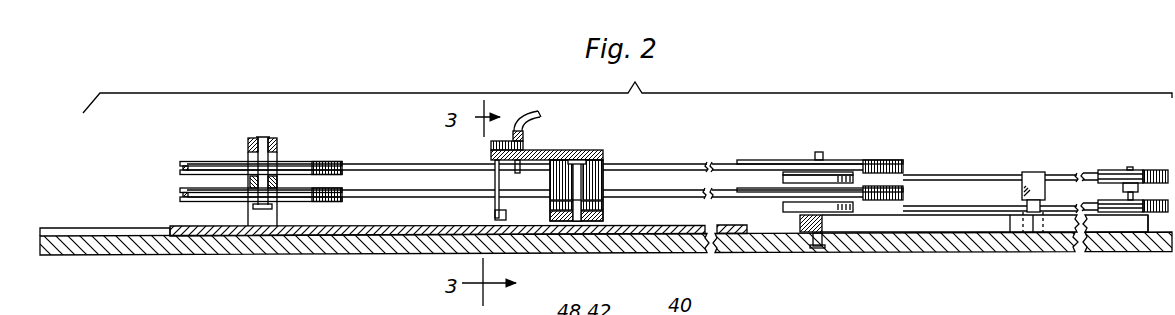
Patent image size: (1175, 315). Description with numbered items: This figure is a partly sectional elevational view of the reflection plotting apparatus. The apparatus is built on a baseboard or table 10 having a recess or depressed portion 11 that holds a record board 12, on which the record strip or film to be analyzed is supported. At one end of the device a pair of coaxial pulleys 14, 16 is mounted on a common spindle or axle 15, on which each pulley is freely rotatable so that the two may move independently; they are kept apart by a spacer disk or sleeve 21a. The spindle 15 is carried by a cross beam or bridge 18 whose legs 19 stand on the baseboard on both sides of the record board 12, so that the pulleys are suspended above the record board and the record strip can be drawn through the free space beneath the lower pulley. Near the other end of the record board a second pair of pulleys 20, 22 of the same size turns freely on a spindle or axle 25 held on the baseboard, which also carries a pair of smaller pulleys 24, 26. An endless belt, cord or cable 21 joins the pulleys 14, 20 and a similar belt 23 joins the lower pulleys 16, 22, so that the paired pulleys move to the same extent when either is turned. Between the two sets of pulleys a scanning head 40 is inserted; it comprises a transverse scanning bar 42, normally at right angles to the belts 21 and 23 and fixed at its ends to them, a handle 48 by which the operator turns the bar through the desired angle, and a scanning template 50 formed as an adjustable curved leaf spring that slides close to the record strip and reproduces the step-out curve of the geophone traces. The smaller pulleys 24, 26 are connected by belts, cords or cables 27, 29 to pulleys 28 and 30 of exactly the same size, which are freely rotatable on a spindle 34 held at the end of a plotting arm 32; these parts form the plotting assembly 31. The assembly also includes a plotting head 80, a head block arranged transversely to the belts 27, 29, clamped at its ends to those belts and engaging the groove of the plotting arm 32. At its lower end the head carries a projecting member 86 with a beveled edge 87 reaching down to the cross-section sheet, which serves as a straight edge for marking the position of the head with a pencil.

The baseboard or table 10 is at (210, 250).
The recess or depressed portion 11 is at (135, 231).
The record board 12 is at (186, 232).
The pulley 14 is at (200, 166).
The spindle or axle 15 is at (271, 162).
The pulley 16 is at (190, 199).
The cross beam or bridge 18 is at (264, 148).
The legs 19 is at (276, 216).
The pulley 20 is at (887, 160).
The endless belt, cord or cable 21 is at (380, 167).
The spacer disk or sleeve 21a is at (284, 173).
The pulley 22 is at (903, 190).
The belt 23 is at (388, 194).
The pulley 24 is at (784, 180).
The spindle or axle 25 is at (820, 152).
The pulley 26 is at (786, 204).
The endless belt, cord or cable 27 is at (962, 174).
The pulley 28 is at (1150, 170).
The endless belt, cord or cable 29 is at (975, 205).
The pulley 30 is at (1157, 213).
The plotting assembly 31 is at (1079, 171).
The plotting arm 32 is at (953, 226).
The spindle 34 is at (1130, 167).
The scanning head 40 is at (593, 144).
The transverse scanning bar 42 is at (526, 143).
The handle 48 is at (541, 115).
The scanning template 50 is at (495, 216).
The plotting head 80 is at (1037, 166).
The projecting member 86 is at (1034, 224).
The beveled edge 87 is at (1012, 226).